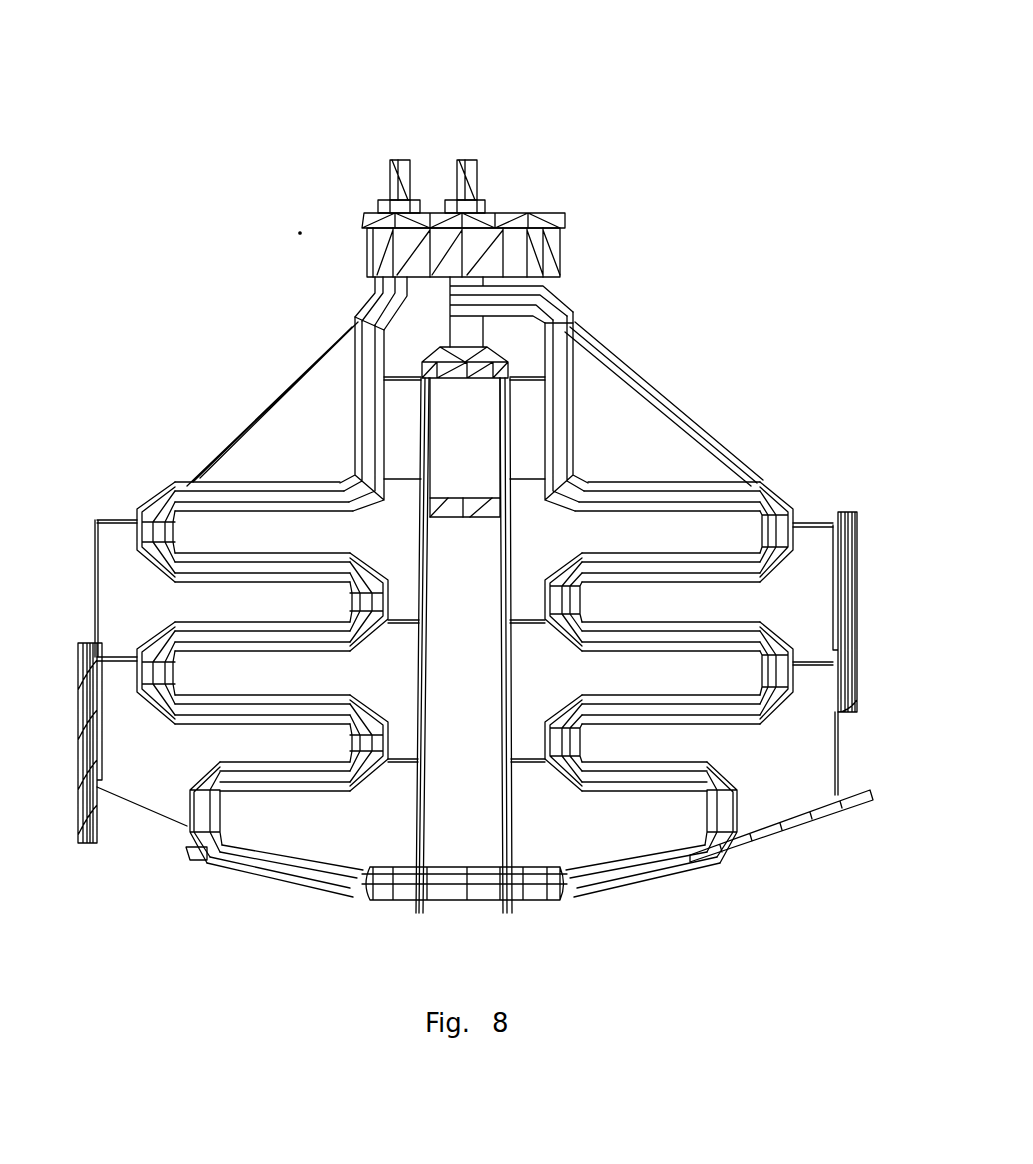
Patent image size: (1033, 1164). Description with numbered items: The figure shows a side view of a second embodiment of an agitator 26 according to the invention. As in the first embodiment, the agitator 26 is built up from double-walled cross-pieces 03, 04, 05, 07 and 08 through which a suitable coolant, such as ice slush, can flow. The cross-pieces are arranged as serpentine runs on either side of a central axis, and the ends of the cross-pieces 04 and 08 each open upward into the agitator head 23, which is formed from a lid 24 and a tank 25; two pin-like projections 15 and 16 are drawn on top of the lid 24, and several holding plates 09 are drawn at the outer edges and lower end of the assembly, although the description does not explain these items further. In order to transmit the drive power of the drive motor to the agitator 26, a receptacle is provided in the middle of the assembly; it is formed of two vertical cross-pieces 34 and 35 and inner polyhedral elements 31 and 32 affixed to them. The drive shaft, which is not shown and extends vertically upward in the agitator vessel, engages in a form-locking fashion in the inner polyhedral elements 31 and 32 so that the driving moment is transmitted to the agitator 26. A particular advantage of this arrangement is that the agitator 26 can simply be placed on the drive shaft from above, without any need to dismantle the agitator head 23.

The double-walled cross-piece 03 is at (663, 501).
The double-walled cross-piece 04 is at (563, 425).
The double-walled cross-piece 05 is at (790, 522).
The double-walled cross-piece 07 is at (483, 890).
The double-walled cross-piece 08 is at (366, 434).
The holding plate 09 is at (842, 598).
The connection pin 15 is at (462, 148).
The connection pin 16 is at (393, 148).
The agitator head 23 is at (523, 184).
The lid 24 is at (567, 214).
The tank 25 is at (552, 250).
The agitator 26 is at (642, 108).
The inner polyhedral element 31 is at (448, 382).
The inner polyhedral element 32 is at (452, 512).
The vertical cross-piece 34 is at (420, 657).
The vertical cross-piece 35 is at (505, 723).